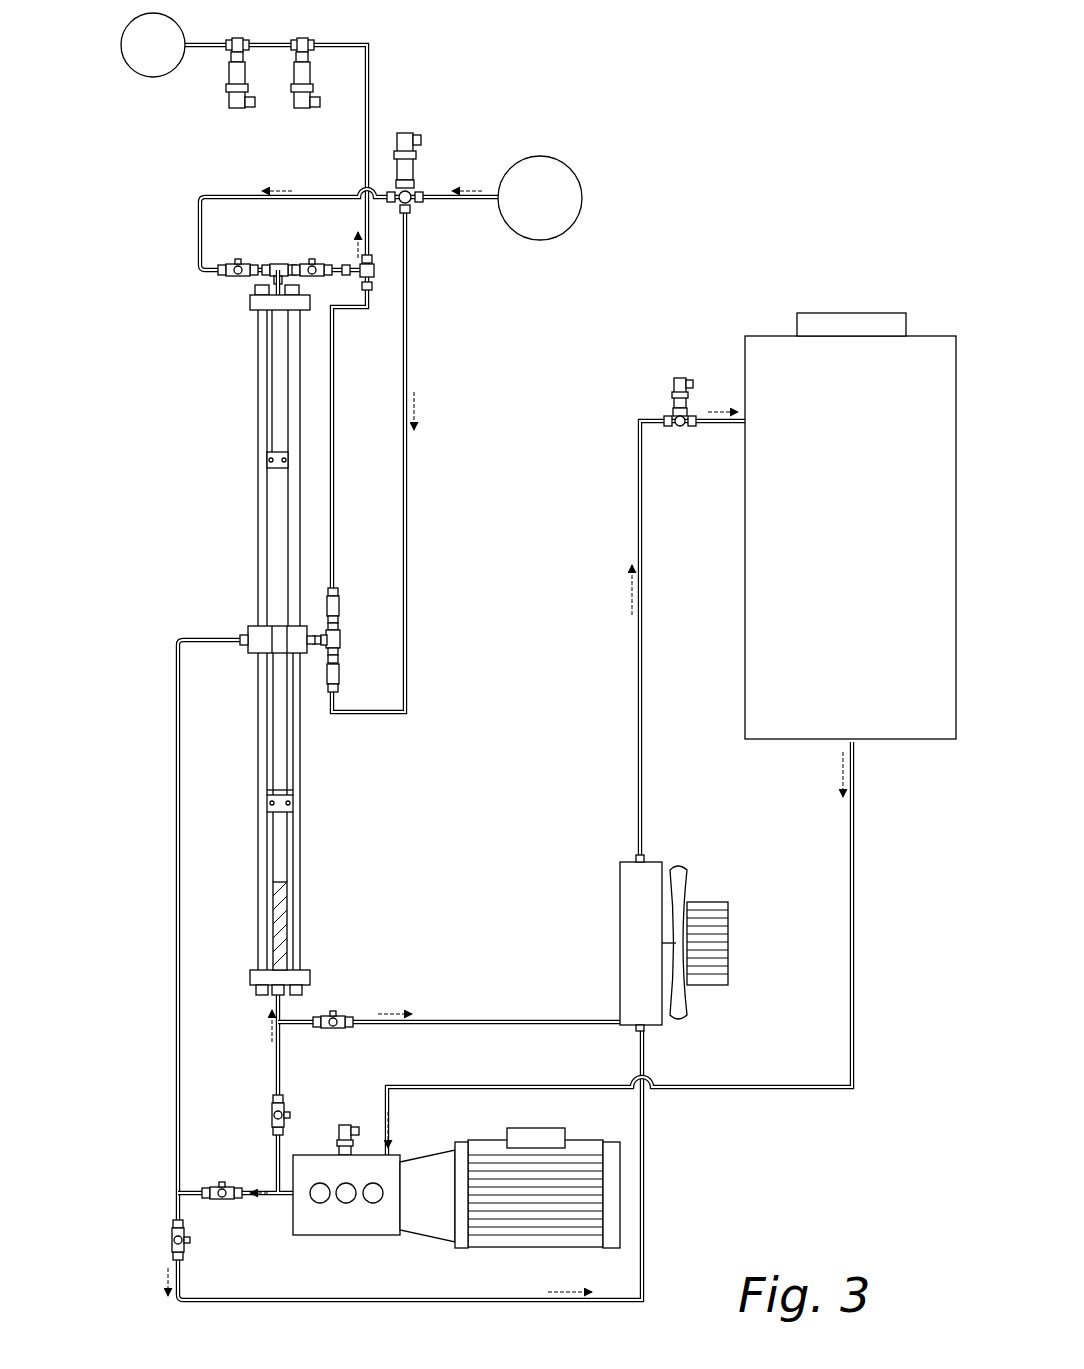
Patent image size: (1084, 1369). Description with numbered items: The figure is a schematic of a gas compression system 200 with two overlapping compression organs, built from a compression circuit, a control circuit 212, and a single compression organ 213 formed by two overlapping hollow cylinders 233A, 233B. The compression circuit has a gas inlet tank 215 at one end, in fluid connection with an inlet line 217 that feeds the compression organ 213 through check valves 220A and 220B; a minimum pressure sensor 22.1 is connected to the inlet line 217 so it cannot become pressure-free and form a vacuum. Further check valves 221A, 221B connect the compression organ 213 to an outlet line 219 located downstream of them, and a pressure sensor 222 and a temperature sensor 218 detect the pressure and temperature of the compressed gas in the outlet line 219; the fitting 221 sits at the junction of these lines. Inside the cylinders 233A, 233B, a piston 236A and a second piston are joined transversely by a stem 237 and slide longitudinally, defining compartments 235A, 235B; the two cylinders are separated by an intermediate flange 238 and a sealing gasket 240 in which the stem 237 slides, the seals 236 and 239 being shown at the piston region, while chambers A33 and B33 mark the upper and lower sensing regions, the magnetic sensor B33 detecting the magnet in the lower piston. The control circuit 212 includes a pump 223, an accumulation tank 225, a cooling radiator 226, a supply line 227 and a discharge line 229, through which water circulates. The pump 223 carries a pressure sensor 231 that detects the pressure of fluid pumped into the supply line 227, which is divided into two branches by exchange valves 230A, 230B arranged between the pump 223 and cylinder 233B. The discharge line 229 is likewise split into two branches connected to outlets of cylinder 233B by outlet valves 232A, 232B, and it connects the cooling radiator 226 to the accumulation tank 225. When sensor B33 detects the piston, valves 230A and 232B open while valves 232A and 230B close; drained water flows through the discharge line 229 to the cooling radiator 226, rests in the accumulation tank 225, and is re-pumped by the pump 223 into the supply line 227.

The gas compression system 200 is at (760, 133).
The control circuit 212 is at (183, 990).
The compression organ 213 is at (186, 568).
The gas inlet tank 215 is at (560, 218).
The inlet line 217 is at (238, 192).
The temperature sensor 218 is at (240, 108).
The outlet line 219 is at (378, 62).
The check valve 220A is at (237, 262).
The check valve 220B is at (337, 672).
The cross fitting 221 is at (462, 72).
The valve 22.1 is at (420, 130).
The check valve 221A is at (310, 262).
The check valve 221B is at (337, 600).
The pressure sensor 222 is at (302, 108).
The pump 223 is at (435, 1235).
The accumulation tank 225 is at (858, 307).
The cooling radiator 226 is at (122, 55).
The supply line 227 is at (270, 1168).
The discharge line 229 is at (535, 1014).
The exchange valve 230A is at (225, 1172).
The exchange valve 230B is at (268, 1110).
The pressure sensor 231 is at (678, 378).
The outlet valve 232A is at (172, 1240).
The outlet valve 232B is at (345, 1010).
The cylinder 233A is at (274, 372).
The cylinder 233B is at (280, 882).
The compartment 235A is at (280, 405).
The compartment 235B is at (283, 852).
The seal 236 is at (290, 800).
The piston 236A is at (268, 462).
The stem 237 is at (272, 752).
The intermediate flange 238 is at (247, 638).
The seal 239 is at (265, 795).
The sealing gasket 240 is at (268, 634).
The upper chamber A33 is at (258, 690).
The magnetic sensor B33 is at (258, 940).